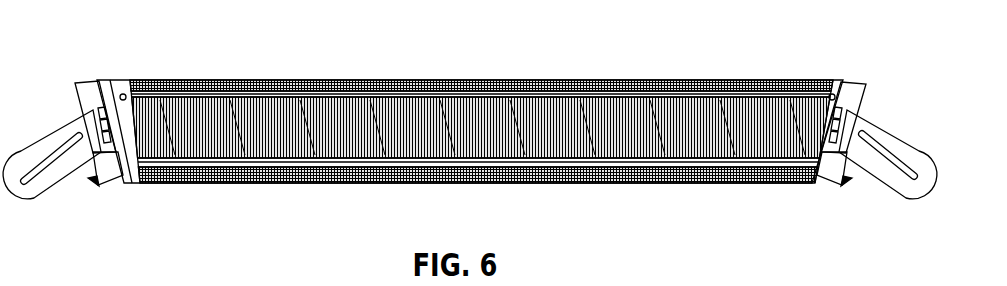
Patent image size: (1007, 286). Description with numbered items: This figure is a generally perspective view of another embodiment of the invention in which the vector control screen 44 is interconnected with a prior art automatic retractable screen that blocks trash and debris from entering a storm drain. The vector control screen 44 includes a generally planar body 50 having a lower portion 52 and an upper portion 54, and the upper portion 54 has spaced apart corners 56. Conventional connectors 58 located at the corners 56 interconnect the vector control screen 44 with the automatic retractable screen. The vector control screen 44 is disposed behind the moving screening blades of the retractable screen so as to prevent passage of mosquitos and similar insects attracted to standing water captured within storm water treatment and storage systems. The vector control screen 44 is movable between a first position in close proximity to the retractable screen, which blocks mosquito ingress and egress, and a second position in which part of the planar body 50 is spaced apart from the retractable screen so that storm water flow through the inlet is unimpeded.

The vector control screen 44 is at (458, 124).
The planar body 50 is at (553, 134).
The lower portion 52 is at (300, 186).
The upper portion 54 is at (292, 80).
The corners 56 is at (125, 94).
The connectors 58 is at (115, 80).